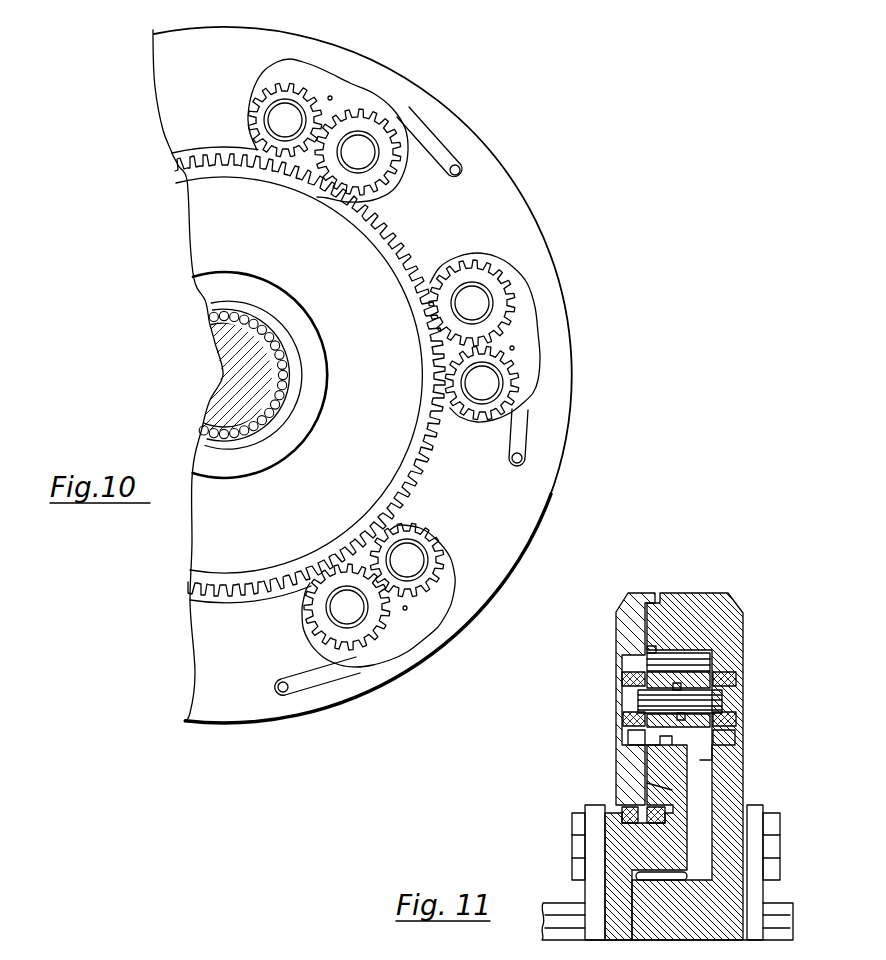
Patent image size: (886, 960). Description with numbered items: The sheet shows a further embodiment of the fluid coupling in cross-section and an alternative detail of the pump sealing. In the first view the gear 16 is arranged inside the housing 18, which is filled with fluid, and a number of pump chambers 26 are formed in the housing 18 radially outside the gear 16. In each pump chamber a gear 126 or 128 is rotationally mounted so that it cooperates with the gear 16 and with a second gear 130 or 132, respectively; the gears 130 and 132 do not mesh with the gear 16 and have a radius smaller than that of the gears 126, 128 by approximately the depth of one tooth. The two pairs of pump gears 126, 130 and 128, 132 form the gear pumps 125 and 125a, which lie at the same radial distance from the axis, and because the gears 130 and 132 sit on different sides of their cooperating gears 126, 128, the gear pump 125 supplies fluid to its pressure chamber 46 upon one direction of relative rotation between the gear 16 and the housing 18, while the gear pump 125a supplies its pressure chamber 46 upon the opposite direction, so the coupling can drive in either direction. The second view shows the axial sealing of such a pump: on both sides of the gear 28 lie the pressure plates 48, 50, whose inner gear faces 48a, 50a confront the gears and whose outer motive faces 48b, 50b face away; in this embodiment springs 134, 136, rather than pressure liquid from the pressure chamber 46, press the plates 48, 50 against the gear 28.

In FIG. 10, the gear 16 is at (325, 195).
In FIG. 10, the housing 18 is at (183, 123).
In FIG. 10, the pump chambers 26 is at (303, 160).
In FIG. 10, the pressure chamber 46 is at (440, 351).
In FIG. 10, the gear pump 125 is at (302, 72).
In FIG. 10, the gear pump 125a is at (527, 325).
In FIG. 10, the gear 126 is at (383, 152).
In FIG. 10, the gear 128 is at (495, 292).
In FIG. 10, the second gear 130 is at (300, 100).
In FIG. 10, the second gear 132 is at (507, 395).
In FIG. 11, the gear 28 is at (673, 667).
In FIG. 11, the pressure plate 48 is at (638, 695).
In FIG. 11, the gear face 48a is at (663, 737).
In FIG. 11, the motive face 48b is at (640, 731).
In FIG. 11, the pressure plate 50 is at (722, 663).
In FIG. 11, the gear face 50a is at (727, 750).
In FIG. 11, the motive face 50b is at (712, 740).
In FIG. 11, the spring 134 is at (632, 677).
In FIG. 11, the spring 136 is at (722, 725).